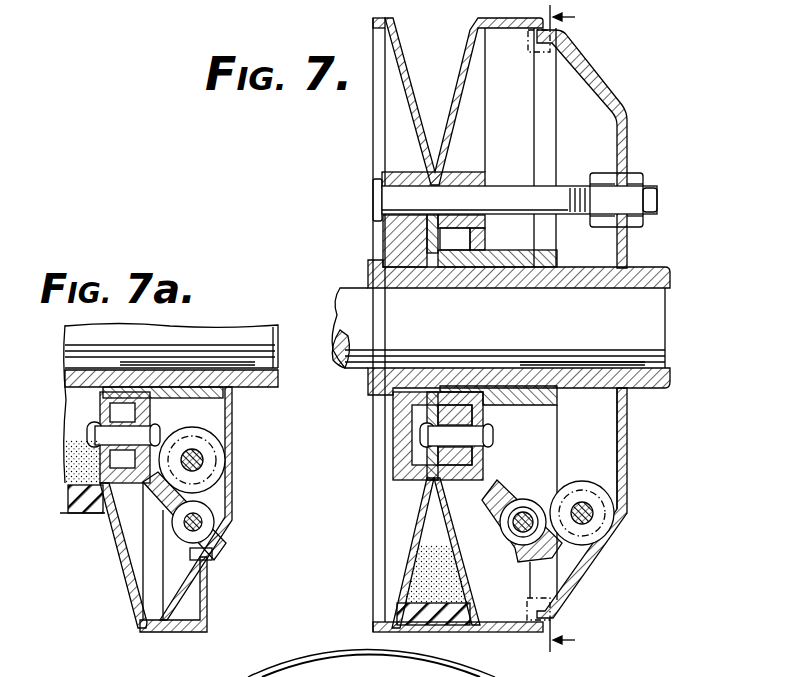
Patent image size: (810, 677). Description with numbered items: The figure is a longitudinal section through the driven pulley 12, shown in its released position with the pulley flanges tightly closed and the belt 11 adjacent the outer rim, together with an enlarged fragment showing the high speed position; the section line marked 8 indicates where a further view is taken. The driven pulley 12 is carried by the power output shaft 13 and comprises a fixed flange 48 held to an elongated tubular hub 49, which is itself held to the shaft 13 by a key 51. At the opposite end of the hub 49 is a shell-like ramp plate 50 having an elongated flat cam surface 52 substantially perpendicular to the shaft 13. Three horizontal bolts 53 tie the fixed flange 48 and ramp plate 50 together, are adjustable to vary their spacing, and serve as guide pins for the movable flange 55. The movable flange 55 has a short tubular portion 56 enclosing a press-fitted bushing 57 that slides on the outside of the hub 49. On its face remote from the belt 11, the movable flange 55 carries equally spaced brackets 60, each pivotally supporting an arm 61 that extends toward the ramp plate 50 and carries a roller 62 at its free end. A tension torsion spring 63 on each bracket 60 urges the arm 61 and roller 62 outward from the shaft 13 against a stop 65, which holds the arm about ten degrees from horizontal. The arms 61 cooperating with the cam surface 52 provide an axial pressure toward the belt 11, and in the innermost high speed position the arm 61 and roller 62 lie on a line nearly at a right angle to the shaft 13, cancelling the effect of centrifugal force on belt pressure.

In FIG. 7, the section line 8- 8 is at (575, 333).
In FIG. 7, the V-belt 11 is at (450, 628).
In FIG. 7A, the V-belt 11 is at (82, 496).
In FIG. 7, the driven pulley 12 is at (358, 175).
In FIG. 7, the power output shaft 13 is at (643, 308).
In FIG. 7A, the power output shaft 13 is at (270, 298).
In FIG. 7, the fixed flange 48 is at (412, 538).
In FIG. 7, the tubular hub 49 is at (658, 276).
In FIG. 7, the ramp plate 50 is at (596, 86).
In FIG. 7, the key 51 is at (636, 372).
In FIG. 7A, the key 51 is at (208, 367).
In FIG. 7, the flat cam surface 52 is at (627, 428).
In FIG. 7A, the flat cam surface 52 is at (228, 424).
In FIG. 7, the horizontal bolts 53 is at (530, 196).
In FIG. 7, the movable flange 55 is at (463, 62).
In FIG. 7A, the movable flange 55 is at (122, 564).
In FIG. 7, the short tubular portion 56 is at (547, 253).
In FIG. 7, the bushing 57 is at (546, 388).
In FIG. 7A, the bushing 57 is at (216, 392).
In FIG. 7, the bracket 60 is at (483, 473).
In FIG. 7A, the bracket 60 is at (146, 482).
In FIG. 7, the arm 61 is at (560, 538).
In FIG. 7A, the arm 61 is at (226, 490).
In FIG. 7, the roller 62 is at (600, 505).
In FIG. 7A, the roller 62 is at (208, 450).
In FIG. 7, the tension torsion spring 63 is at (526, 499).
In FIG. 7, the stop 65 is at (527, 560).
In FIG. 7A, the stop 65 is at (205, 554).